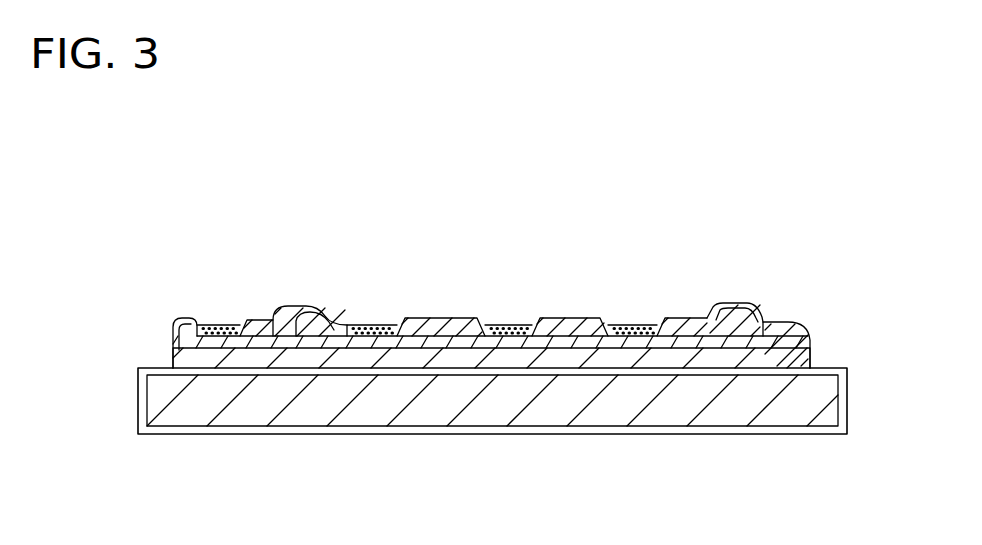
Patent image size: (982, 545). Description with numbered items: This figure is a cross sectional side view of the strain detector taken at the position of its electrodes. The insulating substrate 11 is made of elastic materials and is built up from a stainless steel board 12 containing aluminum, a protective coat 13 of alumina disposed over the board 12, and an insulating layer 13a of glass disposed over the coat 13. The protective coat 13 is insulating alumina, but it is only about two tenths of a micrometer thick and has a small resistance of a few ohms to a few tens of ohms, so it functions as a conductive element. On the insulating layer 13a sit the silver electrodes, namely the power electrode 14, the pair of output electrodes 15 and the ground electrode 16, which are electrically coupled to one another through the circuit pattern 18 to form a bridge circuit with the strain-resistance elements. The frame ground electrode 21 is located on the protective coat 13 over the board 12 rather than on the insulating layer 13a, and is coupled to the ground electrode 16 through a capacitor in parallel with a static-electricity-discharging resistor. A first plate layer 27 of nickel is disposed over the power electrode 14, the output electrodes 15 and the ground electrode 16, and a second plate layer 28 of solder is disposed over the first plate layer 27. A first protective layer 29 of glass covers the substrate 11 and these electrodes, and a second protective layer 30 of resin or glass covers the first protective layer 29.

The insulating substrate 11 is at (535, 405).
The stainless steel board 12 is at (457, 405).
The protective coat 13 is at (823, 370).
The insulating layer 13a is at (355, 345).
The power electrode 14 is at (368, 325).
The output electrodes 15 is at (503, 325).
The ground electrode 16 is at (608, 323).
The circuit pattern 18 is at (310, 322).
The frame ground electrode 21 is at (760, 325).
The first plate layer 27 is at (650, 322).
The second plate layer 28 is at (624, 323).
The first protective layer 29 is at (248, 321).
The second protective layer 30 is at (273, 318).